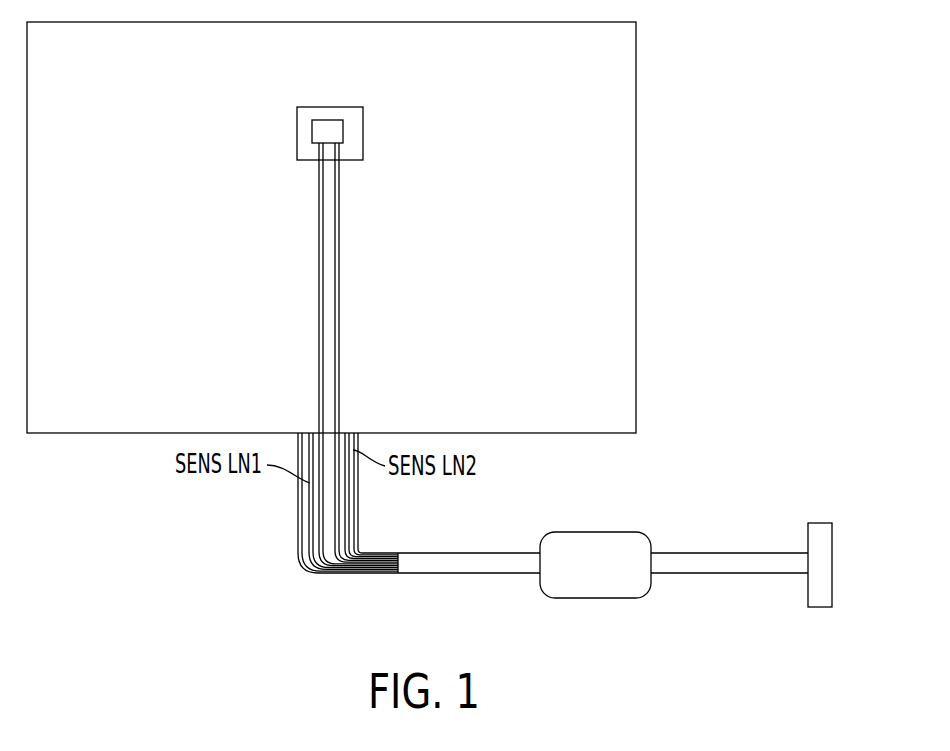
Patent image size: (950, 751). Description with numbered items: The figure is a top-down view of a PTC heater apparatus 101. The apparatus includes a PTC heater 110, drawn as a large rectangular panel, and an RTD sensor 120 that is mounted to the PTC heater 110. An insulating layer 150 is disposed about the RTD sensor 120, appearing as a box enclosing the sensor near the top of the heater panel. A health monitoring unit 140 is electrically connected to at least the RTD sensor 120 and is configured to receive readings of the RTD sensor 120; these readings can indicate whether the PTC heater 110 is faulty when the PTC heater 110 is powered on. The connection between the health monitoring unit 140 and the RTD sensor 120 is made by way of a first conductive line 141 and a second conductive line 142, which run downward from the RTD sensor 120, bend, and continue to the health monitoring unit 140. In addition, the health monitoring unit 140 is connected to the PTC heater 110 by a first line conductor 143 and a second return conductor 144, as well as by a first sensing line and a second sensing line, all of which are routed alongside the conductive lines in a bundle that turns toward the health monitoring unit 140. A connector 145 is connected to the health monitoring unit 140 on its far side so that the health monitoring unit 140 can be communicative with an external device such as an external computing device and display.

The PTC heater apparatus 101 is at (657, 97).
The PTC heater 110 is at (637, 355).
The RTD sensor 120 is at (312, 133).
The insulating layer 150 is at (363, 136).
The first conductive line 141 is at (319, 292).
The second conductive line 142 is at (339, 270).
The first line conductor 143 is at (298, 537).
The second return conductor 144 is at (360, 483).
The health monitoring unit 140 is at (613, 579).
The connector 145 is at (822, 522).